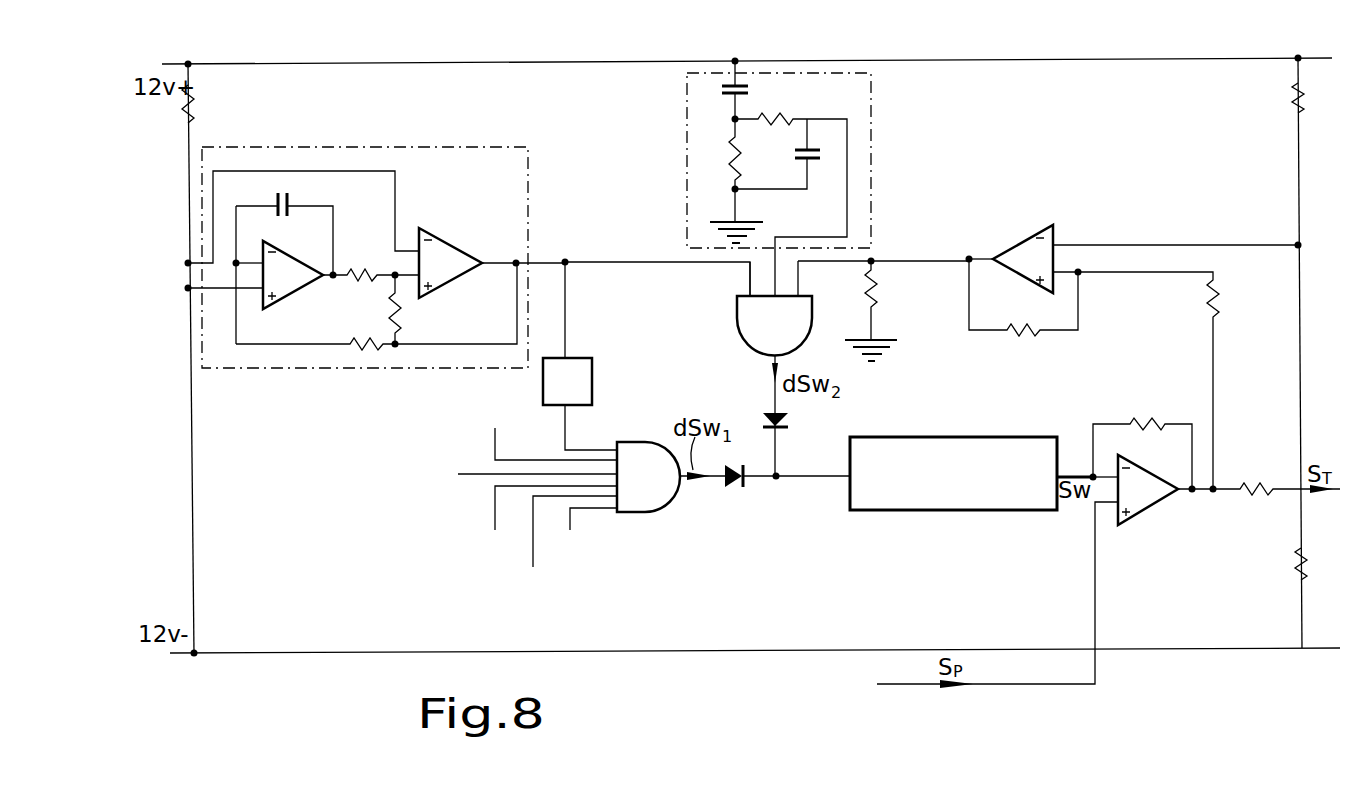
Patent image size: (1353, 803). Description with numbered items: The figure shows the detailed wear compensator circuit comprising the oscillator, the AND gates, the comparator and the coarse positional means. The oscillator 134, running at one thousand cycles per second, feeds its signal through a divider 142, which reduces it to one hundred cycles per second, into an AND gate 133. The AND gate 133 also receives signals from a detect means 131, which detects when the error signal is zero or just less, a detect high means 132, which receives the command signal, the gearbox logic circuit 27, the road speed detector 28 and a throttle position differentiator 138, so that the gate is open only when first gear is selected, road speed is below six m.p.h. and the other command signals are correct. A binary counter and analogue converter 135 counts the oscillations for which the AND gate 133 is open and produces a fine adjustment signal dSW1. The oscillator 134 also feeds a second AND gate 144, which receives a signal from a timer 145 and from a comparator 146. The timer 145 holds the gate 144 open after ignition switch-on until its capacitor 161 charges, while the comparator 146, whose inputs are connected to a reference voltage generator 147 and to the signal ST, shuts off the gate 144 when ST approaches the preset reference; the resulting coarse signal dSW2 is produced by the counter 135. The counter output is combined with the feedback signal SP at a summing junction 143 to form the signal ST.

The oscillator 134 is at (440, 147).
The capacitor 161 is at (722, 85).
The timer 145 is at (871, 130).
The comparator 146 is at (1023, 242).
The reference voltage generator 147 is at (1298, 245).
The second AND gate 144 is at (740, 340).
The divider 142 is at (592, 378).
The road speed detector 28 is at (547, 430).
The gearbox logic circuit 27 is at (519, 477).
The detect means 131 is at (546, 524).
The detect high means 132 is at (566, 547).
The throttle position differentiator 138 is at (584, 535).
The AND gate 133 is at (635, 513).
The binary counter and analogue converter 135 is at (918, 510).
The summing junction 143 is at (1140, 515).